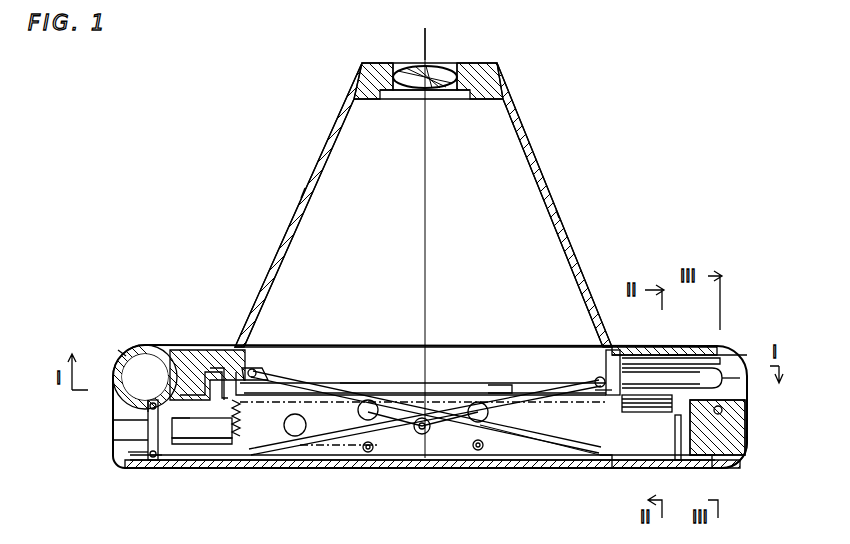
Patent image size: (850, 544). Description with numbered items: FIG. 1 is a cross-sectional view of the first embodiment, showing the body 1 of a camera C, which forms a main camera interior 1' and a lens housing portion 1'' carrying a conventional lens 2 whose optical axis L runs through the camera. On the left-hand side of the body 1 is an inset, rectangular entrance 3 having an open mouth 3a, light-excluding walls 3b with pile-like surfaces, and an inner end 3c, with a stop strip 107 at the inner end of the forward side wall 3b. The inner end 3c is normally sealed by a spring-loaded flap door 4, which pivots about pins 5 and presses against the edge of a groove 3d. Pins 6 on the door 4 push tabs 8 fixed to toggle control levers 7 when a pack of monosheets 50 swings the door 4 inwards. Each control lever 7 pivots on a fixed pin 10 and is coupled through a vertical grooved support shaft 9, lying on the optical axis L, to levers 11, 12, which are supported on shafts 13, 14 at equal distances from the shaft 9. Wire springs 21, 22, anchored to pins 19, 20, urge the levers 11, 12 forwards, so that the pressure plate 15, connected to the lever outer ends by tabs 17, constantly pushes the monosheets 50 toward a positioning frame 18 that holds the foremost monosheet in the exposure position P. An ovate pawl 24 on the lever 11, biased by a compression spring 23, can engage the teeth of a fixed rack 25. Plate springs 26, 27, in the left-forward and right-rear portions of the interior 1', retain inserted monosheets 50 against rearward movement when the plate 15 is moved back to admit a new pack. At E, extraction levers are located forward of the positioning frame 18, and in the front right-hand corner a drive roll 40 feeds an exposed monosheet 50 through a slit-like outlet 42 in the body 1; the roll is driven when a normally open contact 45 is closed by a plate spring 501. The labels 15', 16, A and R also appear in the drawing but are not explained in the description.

The body 1 is at (423, 205).
The main camera interior 1' is at (744, 465).
The lens housing portion 1'' is at (276, 195).
The lens 2 is at (412, 68).
The entrance 3 is at (126, 446).
The open mouth 3a is at (140, 405).
The walls 3b is at (135, 455).
The inner end 3c is at (152, 458).
The groove 3d is at (110, 372).
The flap door 4 is at (135, 437).
The pins 5 is at (156, 462).
The pins 6 is at (122, 378).
The toggle control lever 7 is at (140, 356).
The tabs 8 is at (188, 440).
The support shaft 9 is at (424, 435).
The fixed pin 10 is at (296, 437).
The lever 11 is at (296, 382).
The lever 12 is at (530, 392).
The shaft 13 is at (370, 400).
The shaft 14 is at (478, 402).
The pressure plate 15 is at (423, 349).
The scissor arm 15' is at (340, 476).
The bracket 16 is at (214, 370).
The tab 17 is at (614, 358).
The positioning frame 18 is at (500, 393).
The pin 19 is at (370, 452).
The pin 20 is at (515, 440).
The wire spring 21 is at (335, 392).
The wire spring 22 is at (565, 392).
The compression spring 23 is at (258, 370).
The ovate pawl 24 is at (222, 372).
The fixed rack 25 is at (236, 402).
The plate spring 26 is at (188, 392).
The plate spring 27 is at (606, 462).
The roll 40 is at (742, 440).
The outlet 42 is at (735, 400).
The contacts 45 is at (720, 368).
The monosheets 50 is at (650, 412).
The stop strip 107 is at (128, 353).
The plate spring 501 is at (650, 356).
The optical axis L is at (428, 36).
The camera C is at (576, 210).
The exposure position P is at (355, 383).
The extraction lever location E is at (675, 356).
The axis A is at (735, 380).
The recess R is at (176, 430).